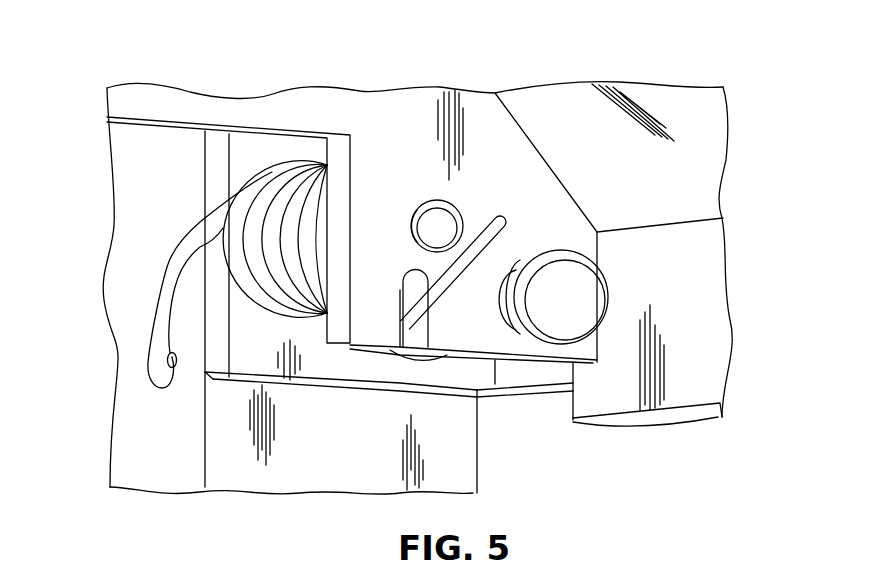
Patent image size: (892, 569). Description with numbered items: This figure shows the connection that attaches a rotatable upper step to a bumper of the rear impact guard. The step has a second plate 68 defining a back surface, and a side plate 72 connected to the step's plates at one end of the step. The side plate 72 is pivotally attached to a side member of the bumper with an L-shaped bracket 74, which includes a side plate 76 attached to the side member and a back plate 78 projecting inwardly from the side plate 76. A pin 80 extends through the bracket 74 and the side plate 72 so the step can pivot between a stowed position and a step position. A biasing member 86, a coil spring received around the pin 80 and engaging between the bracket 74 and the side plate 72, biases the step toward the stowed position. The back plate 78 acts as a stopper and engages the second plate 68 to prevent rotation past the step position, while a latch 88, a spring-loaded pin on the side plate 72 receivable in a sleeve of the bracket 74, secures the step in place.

The second plate 68 is at (692, 373).
The side plate 72 is at (527, 198).
The bracket 74 is at (253, 362).
The side plate 76 is at (365, 366).
The back plate 78 is at (532, 375).
The pin 80 is at (424, 198).
The biasing member 86 is at (284, 205).
The latch 88 is at (608, 297).